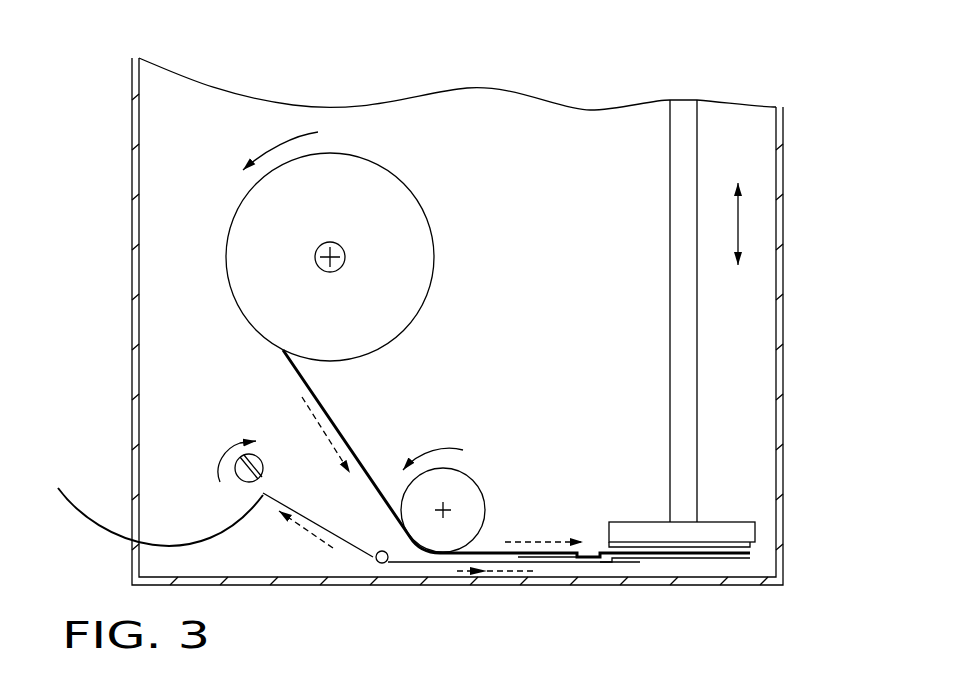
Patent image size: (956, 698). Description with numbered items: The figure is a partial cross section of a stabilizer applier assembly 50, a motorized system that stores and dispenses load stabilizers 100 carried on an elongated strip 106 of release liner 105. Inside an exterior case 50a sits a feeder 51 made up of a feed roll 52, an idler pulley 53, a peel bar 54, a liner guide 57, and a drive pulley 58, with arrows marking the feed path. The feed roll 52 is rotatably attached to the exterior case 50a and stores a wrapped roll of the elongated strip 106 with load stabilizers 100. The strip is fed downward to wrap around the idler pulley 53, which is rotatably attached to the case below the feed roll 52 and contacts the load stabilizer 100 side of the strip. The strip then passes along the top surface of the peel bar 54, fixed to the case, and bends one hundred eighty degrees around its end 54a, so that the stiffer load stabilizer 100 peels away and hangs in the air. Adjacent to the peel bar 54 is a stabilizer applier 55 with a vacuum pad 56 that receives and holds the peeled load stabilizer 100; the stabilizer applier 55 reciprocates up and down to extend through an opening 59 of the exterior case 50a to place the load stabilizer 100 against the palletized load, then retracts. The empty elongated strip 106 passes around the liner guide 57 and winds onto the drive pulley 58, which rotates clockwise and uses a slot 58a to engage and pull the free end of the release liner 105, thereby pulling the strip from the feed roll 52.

The stabilizer applier assembly 50 is at (467, 86).
The exterior case 50a is at (787, 173).
The feeder 51 is at (571, 200).
The feed roll 52 is at (388, 204).
The idler pulley 53 is at (465, 493).
The peel bar 54 is at (570, 563).
The end of peel bar 54a is at (616, 564).
The stabilizer applier 55 is at (683, 327).
The vacuum pad 56 is at (757, 543).
The liner guide 57 is at (378, 563).
The drive pulley 58 is at (242, 487).
The slot 58a is at (263, 470).
The opening 59 is at (681, 598).
The load stabilizer 100 is at (302, 366).
The release liner 105 is at (141, 503).
The elongated strip 106 is at (268, 370).